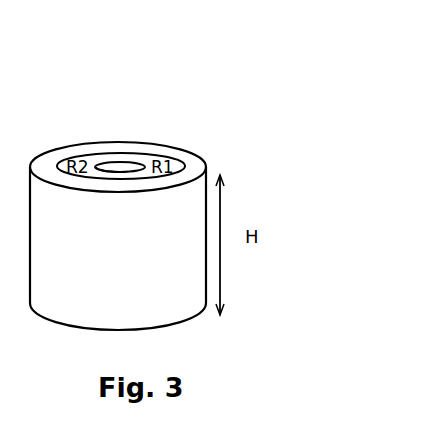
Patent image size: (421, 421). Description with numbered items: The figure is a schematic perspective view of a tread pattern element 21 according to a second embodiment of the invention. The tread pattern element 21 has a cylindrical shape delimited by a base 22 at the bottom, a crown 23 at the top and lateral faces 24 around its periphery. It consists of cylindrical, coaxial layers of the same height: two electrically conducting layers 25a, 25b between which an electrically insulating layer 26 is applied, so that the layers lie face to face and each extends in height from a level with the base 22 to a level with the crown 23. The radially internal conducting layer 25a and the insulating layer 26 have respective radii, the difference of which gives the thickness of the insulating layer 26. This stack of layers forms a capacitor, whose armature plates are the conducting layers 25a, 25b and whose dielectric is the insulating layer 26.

The tread pattern element 21 is at (156, 227).
The base 22 is at (63, 327).
The crown 23 is at (153, 146).
The lateral faces 24 is at (116, 283).
The radially internal conducting layer 25a is at (112, 166).
The electrically conducting layer 25b is at (198, 168).
The electrically insulating layer 26 is at (140, 170).